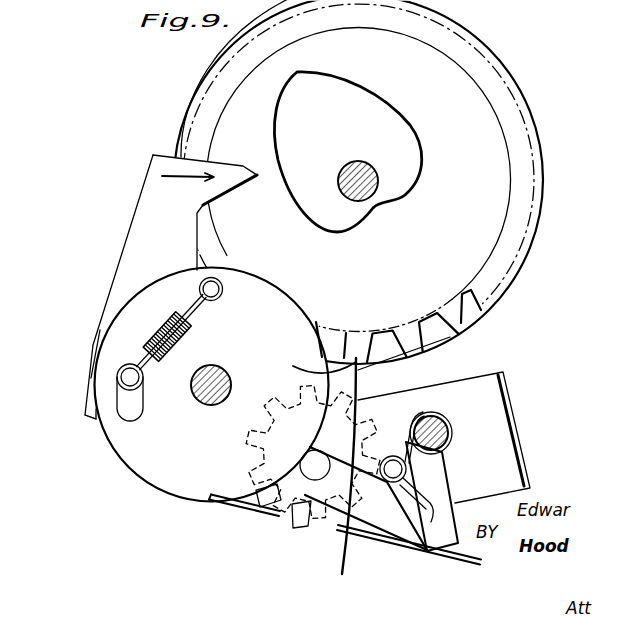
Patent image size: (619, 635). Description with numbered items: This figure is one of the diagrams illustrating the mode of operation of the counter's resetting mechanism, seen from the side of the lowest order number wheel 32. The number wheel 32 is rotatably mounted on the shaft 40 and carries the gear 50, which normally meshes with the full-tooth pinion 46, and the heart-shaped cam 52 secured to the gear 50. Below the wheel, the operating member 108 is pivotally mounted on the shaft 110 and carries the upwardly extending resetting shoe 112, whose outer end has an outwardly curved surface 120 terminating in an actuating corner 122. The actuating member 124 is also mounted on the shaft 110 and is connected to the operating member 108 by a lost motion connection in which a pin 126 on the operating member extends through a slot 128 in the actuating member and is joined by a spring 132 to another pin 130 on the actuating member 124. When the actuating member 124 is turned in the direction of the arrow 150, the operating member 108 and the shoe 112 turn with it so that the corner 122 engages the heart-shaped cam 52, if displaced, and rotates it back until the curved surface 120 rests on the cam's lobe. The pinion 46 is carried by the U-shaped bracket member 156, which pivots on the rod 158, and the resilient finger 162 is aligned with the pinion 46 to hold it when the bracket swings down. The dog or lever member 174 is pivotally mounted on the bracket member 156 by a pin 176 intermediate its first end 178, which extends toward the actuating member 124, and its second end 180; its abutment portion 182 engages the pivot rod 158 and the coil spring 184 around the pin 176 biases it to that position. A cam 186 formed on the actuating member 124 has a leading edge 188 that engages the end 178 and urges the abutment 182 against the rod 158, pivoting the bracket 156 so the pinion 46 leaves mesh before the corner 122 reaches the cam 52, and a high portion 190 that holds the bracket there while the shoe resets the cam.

The lowest order number wheel 32 is at (549, 160).
The shaft 40 is at (379, 181).
The full-tooth pinion 46 is at (298, 528).
The gear 50 is at (480, 249).
The heart-shaped cam 52 is at (417, 143).
The operating member 108 is at (86, 383).
The shaft 110 is at (205, 393).
The resetting shoe 112 is at (138, 232).
The curved surface 120 is at (163, 155).
The actuating corner 122 is at (232, 165).
The actuating member 124 is at (150, 468).
The pin 126 is at (134, 378).
The slot 128 is at (123, 413).
The pin 130 is at (220, 292).
The spring 132 is at (150, 315).
The arrow 150 is at (185, 178).
The U-shaped bracket member 156 is at (512, 388).
The rod 158 is at (437, 421).
The resilient finger 162 is at (257, 516).
The lever member 174 is at (427, 555).
The pin 176 is at (394, 466).
The first end 178 is at (338, 478).
The second end 180 is at (450, 563).
The abutment portion 182 is at (452, 457).
The coil spring 184 is at (452, 481).
The cam 186 is at (394, 380).
The leading edge 188 is at (330, 452).
The high portion 190 is at (307, 364).